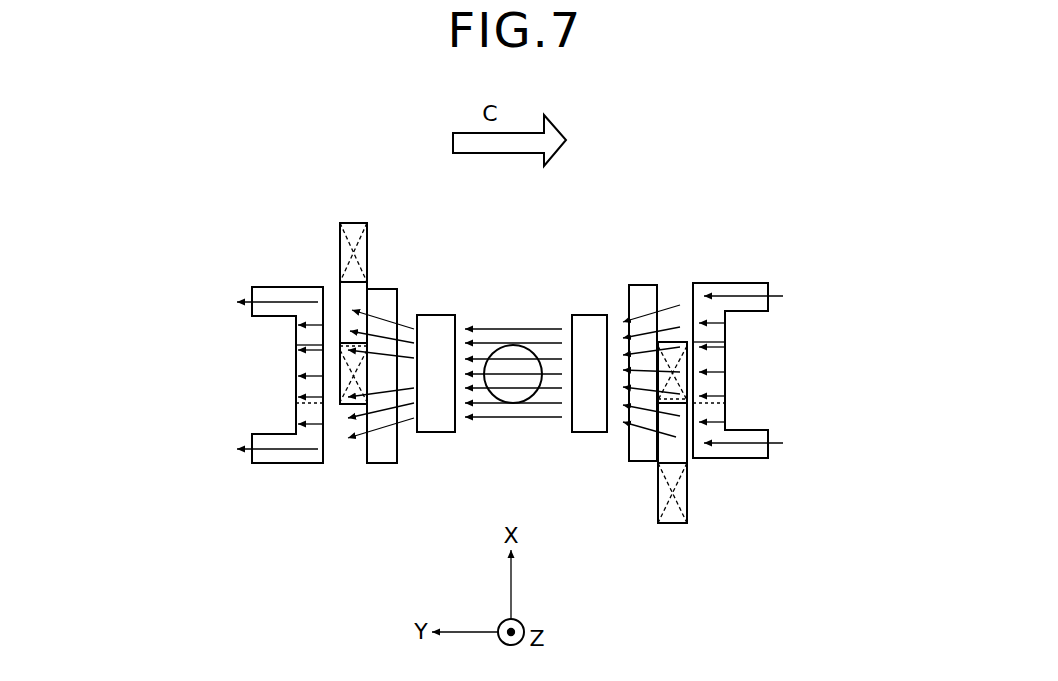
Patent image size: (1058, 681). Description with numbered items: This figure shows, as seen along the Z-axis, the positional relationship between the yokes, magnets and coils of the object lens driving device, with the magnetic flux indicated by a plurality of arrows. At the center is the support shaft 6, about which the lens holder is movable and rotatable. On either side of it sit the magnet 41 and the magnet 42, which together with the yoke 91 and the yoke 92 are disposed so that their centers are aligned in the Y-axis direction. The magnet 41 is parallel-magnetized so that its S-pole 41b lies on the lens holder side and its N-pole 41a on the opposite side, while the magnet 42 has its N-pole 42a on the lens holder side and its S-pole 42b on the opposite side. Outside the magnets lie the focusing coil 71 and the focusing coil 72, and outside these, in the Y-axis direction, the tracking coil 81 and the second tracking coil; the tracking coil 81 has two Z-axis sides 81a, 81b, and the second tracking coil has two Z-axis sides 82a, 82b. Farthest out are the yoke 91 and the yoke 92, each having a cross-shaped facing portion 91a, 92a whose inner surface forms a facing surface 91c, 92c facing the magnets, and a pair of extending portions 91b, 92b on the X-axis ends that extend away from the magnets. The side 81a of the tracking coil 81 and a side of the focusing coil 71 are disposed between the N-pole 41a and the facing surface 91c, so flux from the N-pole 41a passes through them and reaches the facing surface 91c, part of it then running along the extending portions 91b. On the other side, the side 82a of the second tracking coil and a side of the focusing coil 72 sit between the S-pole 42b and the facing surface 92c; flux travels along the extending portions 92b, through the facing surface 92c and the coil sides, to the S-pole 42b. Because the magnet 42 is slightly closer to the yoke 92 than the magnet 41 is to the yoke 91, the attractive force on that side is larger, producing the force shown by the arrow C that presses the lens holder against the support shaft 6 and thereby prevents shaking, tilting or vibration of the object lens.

The support shaft 6 is at (516, 366).
The magnet 41 is at (440, 313).
The N-pole 41a is at (419, 433).
The S-pole 41b is at (456, 432).
The magnet 42 is at (586, 313).
The N-pole 42a is at (571, 433).
The S-pole 42b is at (605, 433).
The focusing coil 71 is at (379, 464).
The focusing coil 72 is at (647, 284).
The tracking coil 81 is at (370, 254).
The side of the tracking coil 81a is at (345, 404).
The side of the tracking coil 81b is at (353, 222).
The side of the tracking coil 82a is at (674, 341).
The side of the tracking coil 82b is at (655, 492).
The yoke 91 is at (290, 280).
The facing portion 91a is at (307, 359).
The extending portions 91b is at (267, 286).
The facing surface 91c is at (323, 463).
The yoke 92 is at (736, 276).
The facing portion 92a is at (704, 358).
The extending portions 92b is at (752, 282).
The facing surface 92c is at (705, 407).